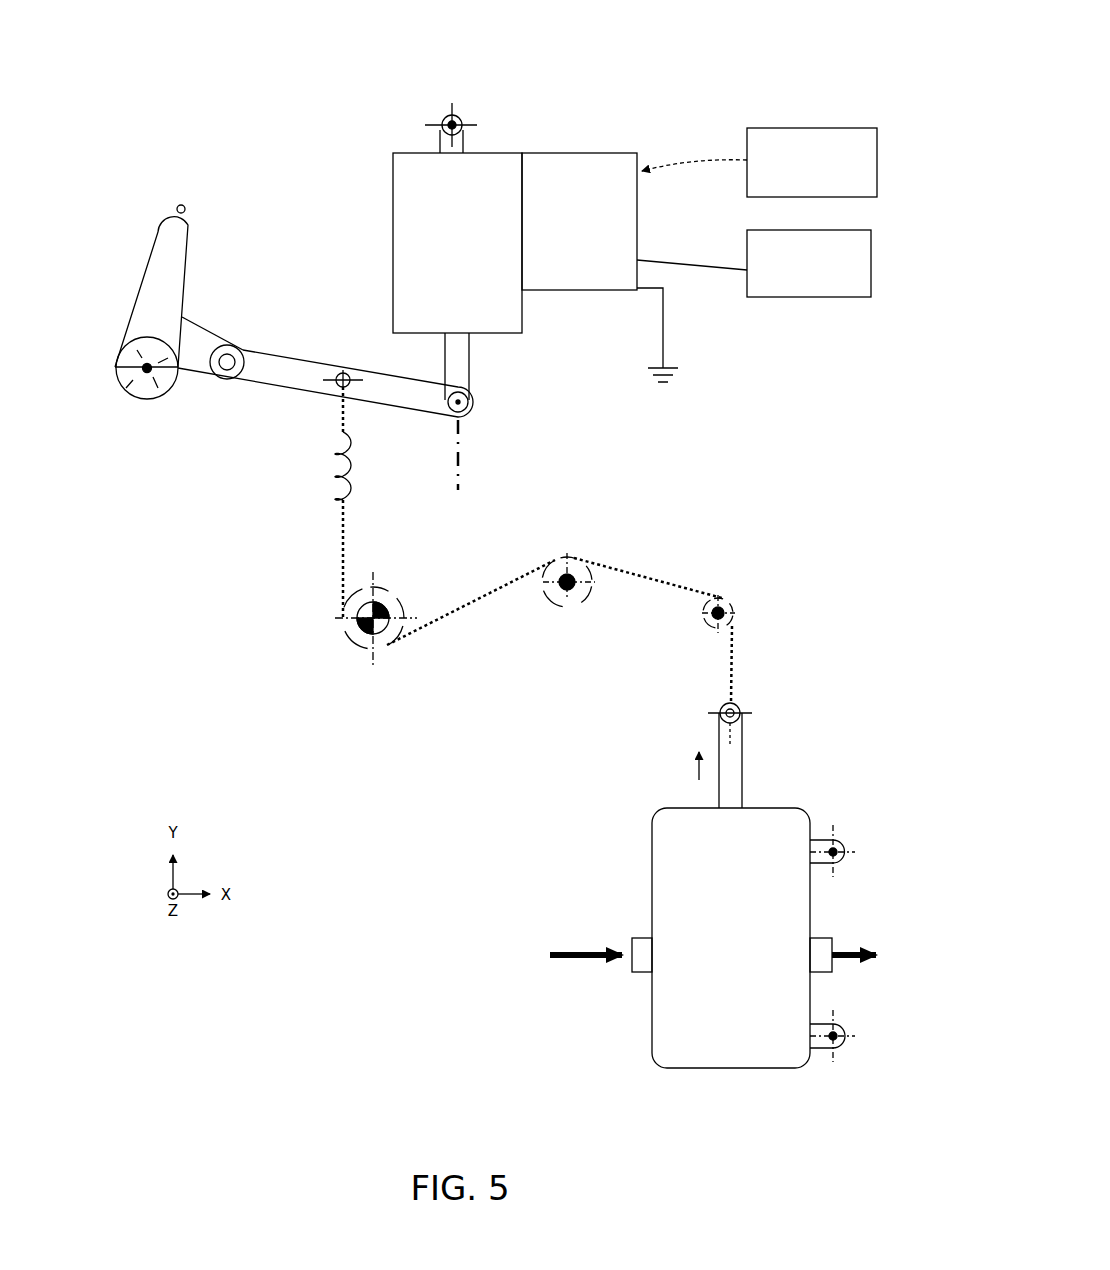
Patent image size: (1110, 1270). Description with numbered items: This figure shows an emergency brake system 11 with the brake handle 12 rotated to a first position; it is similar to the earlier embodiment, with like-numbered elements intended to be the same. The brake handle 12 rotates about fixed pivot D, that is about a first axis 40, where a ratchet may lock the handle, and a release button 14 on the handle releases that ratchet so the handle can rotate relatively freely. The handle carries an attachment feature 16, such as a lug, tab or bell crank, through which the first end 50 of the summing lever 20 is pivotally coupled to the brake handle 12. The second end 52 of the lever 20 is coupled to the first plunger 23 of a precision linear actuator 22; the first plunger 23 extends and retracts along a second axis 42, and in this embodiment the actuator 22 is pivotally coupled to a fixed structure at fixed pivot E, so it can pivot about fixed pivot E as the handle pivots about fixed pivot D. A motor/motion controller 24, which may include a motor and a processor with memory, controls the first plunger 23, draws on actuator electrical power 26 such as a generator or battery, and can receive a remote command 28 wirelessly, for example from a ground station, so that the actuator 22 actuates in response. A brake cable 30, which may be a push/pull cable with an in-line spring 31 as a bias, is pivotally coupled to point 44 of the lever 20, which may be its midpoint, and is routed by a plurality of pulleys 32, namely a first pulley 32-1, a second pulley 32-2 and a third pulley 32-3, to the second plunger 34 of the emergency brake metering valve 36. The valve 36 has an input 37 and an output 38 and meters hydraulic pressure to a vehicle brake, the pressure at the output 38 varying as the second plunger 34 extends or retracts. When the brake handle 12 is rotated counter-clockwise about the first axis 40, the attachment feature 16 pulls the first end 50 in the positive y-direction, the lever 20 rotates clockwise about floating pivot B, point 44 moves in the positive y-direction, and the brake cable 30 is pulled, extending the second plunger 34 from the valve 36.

The emergency brake system 11 is at (403, 95).
The brake handle 12 is at (153, 252).
The release button 14 is at (184, 205).
The attachment feature 16 is at (207, 318).
The summing lever 20 is at (287, 363).
The linear actuator 22 is at (480, 160).
The first plunger 23 is at (470, 338).
The motor/motion controller 24 is at (597, 160).
The actuator electrical power 26 is at (775, 298).
The remote command 28 is at (775, 128).
The brake cable 30 is at (345, 523).
The spring 31 is at (355, 490).
The plurality of pulleys 32 is at (710, 523).
The first pulley 32-1 is at (348, 655).
The second pulley 32-2 is at (582, 539).
The third pulley 32-3 is at (732, 583).
The second plunger 34 is at (742, 762).
The emergency brake metering valve 36 is at (793, 997).
The input 37 is at (647, 937).
The output 38 is at (820, 937).
The first axis 40 is at (124, 355).
The second axis 42 is at (463, 478).
The point 44 is at (341, 356).
The first end 50 is at (205, 383).
The second end 52 is at (494, 400).